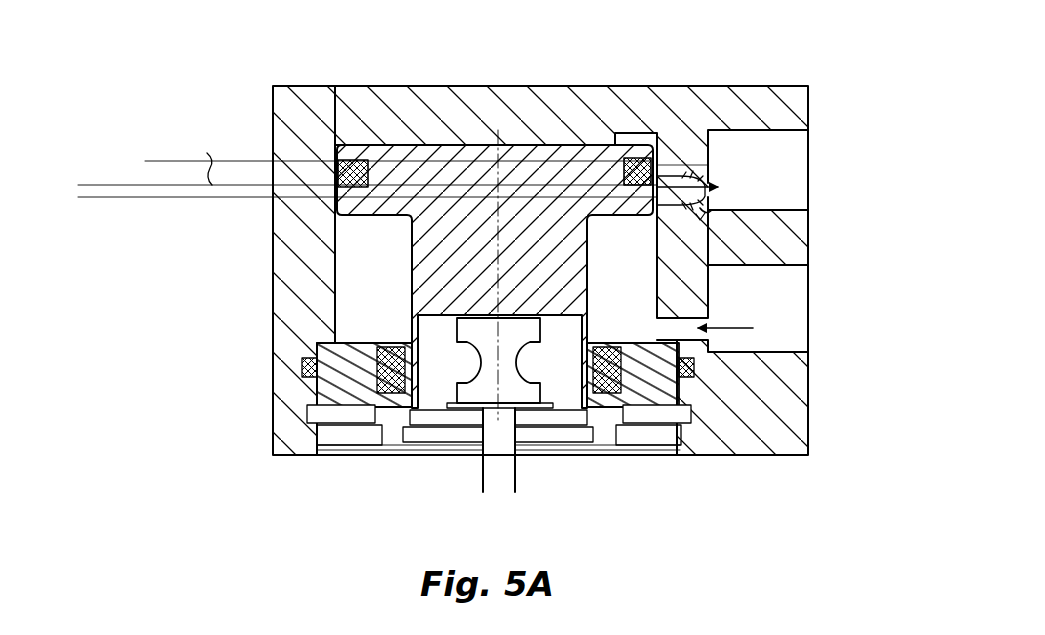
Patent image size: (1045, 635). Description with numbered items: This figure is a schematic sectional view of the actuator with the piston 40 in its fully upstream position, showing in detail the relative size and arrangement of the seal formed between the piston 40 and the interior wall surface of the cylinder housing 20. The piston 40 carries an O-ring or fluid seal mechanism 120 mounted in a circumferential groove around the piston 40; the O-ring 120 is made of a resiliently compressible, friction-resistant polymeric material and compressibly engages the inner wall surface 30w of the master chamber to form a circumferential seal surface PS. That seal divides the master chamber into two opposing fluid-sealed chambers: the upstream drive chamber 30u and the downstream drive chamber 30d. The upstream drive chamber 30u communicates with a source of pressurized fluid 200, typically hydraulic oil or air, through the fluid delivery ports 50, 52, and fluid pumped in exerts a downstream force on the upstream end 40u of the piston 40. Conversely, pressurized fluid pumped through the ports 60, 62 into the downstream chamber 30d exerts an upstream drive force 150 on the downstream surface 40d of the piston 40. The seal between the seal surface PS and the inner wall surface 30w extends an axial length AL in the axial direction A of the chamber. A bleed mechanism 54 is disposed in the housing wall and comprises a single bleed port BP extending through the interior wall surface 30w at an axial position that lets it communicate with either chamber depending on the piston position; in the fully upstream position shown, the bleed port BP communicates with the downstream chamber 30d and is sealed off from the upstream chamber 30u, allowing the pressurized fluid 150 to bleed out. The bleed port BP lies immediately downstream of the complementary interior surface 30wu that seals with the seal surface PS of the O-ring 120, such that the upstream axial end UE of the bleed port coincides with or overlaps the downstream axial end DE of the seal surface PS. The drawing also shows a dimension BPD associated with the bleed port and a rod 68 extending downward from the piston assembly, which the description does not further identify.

The cylinder housing 20 is at (457, 85).
The piston 40 is at (478, 142).
The upstream end of piston 40u is at (550, 142).
The downstream surface of piston 40d is at (362, 220).
The upstream drive chamber 30u is at (640, 140).
The downstream drive chamber 30d is at (343, 317).
The inner wall surface of chamber 30w is at (655, 232).
The complementary interior surface of master chamber 30wu is at (687, 155).
The fluid delivery port 52 is at (648, 158).
The O-ring fluid seal mechanism 120 is at (663, 155).
The fluid delivery port 50 is at (797, 160).
The bleed mechanism 54 is at (703, 214).
The fluid port 60 is at (797, 320).
The fluid port 62 is at (688, 334).
The valve rod 68 is at (514, 488).
The upstream drive force 150 is at (372, 230).
The pressurized fluid 200 is at (733, 326).
The axial direction A is at (504, 130).
The axial length of seal AL is at (158, 226).
The bleed port BP is at (690, 165).
The back pressure direction BPD is at (92, 226).
The downstream axial end of seal surface DE is at (382, 142).
The upstream axial end of bleed port UE is at (801, 87).
The circumferential seal surface PS is at (338, 177).